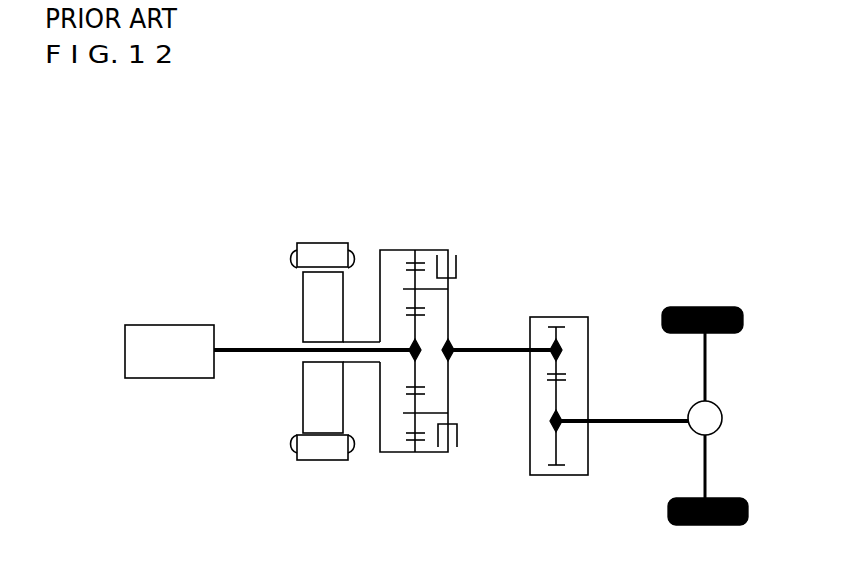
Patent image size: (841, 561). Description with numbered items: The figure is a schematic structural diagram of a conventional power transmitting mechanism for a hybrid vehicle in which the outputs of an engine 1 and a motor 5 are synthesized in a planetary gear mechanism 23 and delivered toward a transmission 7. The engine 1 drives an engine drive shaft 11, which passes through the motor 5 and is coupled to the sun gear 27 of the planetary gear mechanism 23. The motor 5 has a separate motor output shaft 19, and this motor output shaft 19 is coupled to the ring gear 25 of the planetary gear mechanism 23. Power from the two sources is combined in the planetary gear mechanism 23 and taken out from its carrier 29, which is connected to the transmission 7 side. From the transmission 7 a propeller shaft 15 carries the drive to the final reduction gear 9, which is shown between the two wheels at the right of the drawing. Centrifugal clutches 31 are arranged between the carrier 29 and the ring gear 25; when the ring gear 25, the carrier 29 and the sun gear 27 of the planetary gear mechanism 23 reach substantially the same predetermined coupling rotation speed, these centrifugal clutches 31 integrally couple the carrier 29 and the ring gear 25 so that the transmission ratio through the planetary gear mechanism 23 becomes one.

The engine 1 is at (160, 330).
The motor 5 is at (320, 244).
The transmission 7 is at (576, 318).
The final reduction gear 9 is at (700, 411).
The engine drive shaft 11 is at (245, 349).
The propeller shaft 15 is at (625, 424).
The motor output shaft 19 is at (323, 364).
The planetary gear mechanism 23 is at (449, 336).
The ring gear 25 is at (405, 249).
The sun gear 27 is at (417, 332).
The carrier 29 is at (449, 389).
The centrifugal clutch 31 is at (430, 244).